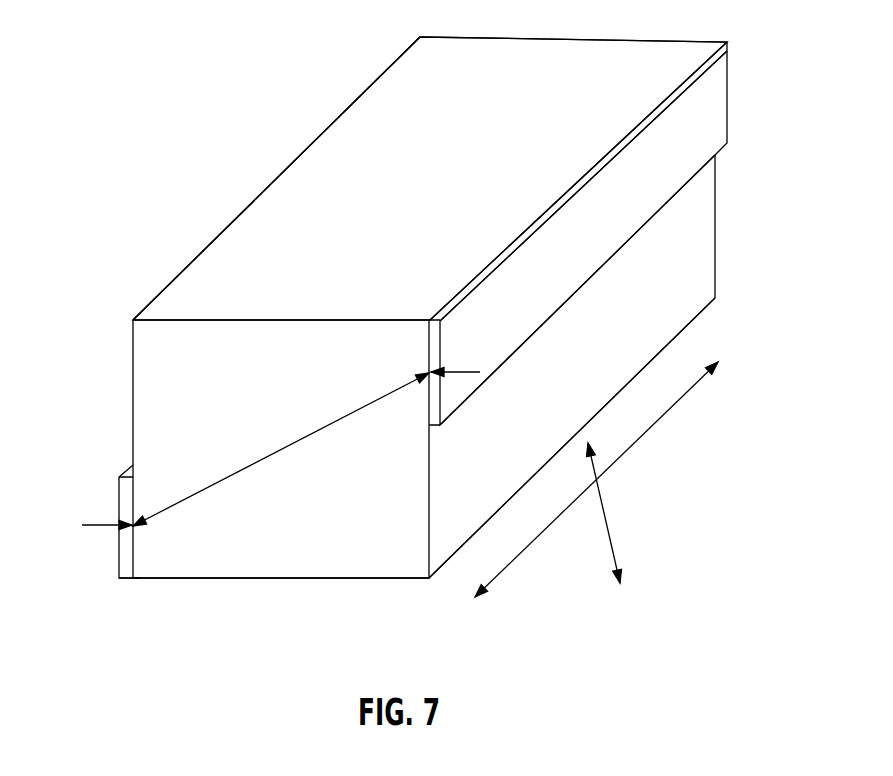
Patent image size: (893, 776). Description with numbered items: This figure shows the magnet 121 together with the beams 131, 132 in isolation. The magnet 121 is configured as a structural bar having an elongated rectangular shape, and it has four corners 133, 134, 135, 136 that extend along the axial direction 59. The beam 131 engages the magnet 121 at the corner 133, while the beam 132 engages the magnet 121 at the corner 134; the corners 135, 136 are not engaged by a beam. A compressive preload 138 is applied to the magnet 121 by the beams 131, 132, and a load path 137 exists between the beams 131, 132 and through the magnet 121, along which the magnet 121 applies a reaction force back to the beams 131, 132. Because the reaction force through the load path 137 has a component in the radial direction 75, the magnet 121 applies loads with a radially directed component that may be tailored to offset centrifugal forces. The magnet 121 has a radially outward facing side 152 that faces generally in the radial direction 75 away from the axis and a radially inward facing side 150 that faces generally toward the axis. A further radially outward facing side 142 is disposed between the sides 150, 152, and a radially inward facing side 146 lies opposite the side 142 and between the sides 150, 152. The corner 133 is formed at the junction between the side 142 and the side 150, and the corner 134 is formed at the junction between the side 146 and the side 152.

The magnet 121 is at (377, 245).
The radially outward facing side 152 is at (412, 107).
The corner 135 is at (300, 153).
The beam 132 is at (587, 273).
The corner 134 is at (620, 143).
The radially inward facing side 146 is at (600, 376).
The corner 136 is at (695, 320).
The radially outward facing side 142 is at (137, 363).
The beam 131 is at (117, 495).
The corner 133 is at (133, 579).
The radially inward facing side 150 is at (295, 573).
The load path 137 is at (268, 455).
The compressive preload 138 is at (95, 528).
The axial direction 59 is at (647, 433).
The radial direction 75 is at (612, 537).